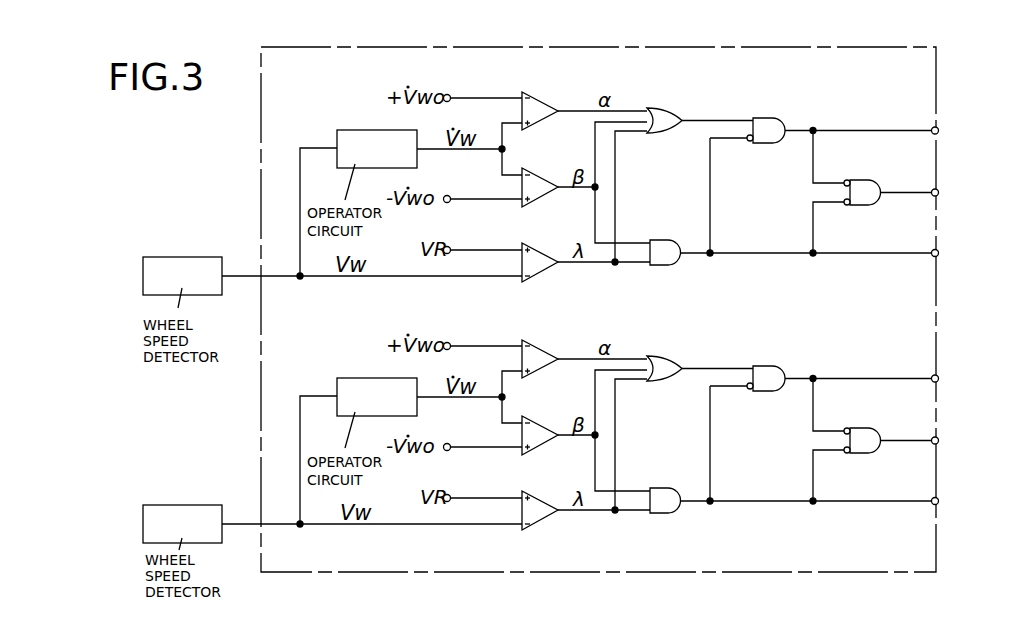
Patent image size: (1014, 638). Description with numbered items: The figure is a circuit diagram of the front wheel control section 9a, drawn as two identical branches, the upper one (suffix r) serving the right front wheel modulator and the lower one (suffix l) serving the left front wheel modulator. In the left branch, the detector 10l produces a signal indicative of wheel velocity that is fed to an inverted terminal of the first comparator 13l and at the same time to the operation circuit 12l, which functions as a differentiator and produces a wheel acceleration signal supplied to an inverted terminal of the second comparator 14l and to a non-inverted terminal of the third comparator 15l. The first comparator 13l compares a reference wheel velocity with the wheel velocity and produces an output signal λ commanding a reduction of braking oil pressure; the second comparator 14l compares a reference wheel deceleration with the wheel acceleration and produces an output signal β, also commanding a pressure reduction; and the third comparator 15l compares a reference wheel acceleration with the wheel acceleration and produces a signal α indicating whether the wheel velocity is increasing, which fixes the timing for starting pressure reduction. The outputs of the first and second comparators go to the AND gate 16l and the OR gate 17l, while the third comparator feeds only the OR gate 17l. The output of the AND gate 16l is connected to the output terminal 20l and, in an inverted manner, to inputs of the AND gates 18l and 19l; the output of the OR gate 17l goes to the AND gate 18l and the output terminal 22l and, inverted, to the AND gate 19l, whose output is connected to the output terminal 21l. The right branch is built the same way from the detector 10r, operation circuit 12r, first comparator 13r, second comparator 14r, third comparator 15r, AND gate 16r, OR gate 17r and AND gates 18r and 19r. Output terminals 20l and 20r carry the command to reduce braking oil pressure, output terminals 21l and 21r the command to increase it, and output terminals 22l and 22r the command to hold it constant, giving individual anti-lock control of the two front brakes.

The front wheel control section 9a is at (418, 46).
The detector 10r is at (173, 263).
The detector 10l is at (173, 511).
The operation circuit 12r is at (352, 137).
The operation circuit 12l is at (352, 385).
The first comparator 13r is at (535, 253).
The first comparator 13l is at (535, 501).
The second comparator 14r is at (537, 181).
The second comparator 14l is at (537, 429).
The third comparator 15r is at (537, 104).
The third comparator 15l is at (537, 352).
The AND gate 16r is at (660, 242).
The AND gate 16l is at (660, 490).
The OR gate 17r is at (657, 110).
The OR gate 17l is at (657, 358).
The AND gate 18r is at (767, 120).
The AND gate 18l is at (767, 368).
The AND gate 19r is at (862, 182).
The AND gate 19l is at (862, 430).
The output terminal 20r is at (939, 253).
The output terminal 20l is at (939, 501).
The output terminal 21r is at (939, 192).
The output terminal 21l is at (939, 440).
The output terminal 22r is at (939, 130).
The output terminal 22l is at (939, 378).